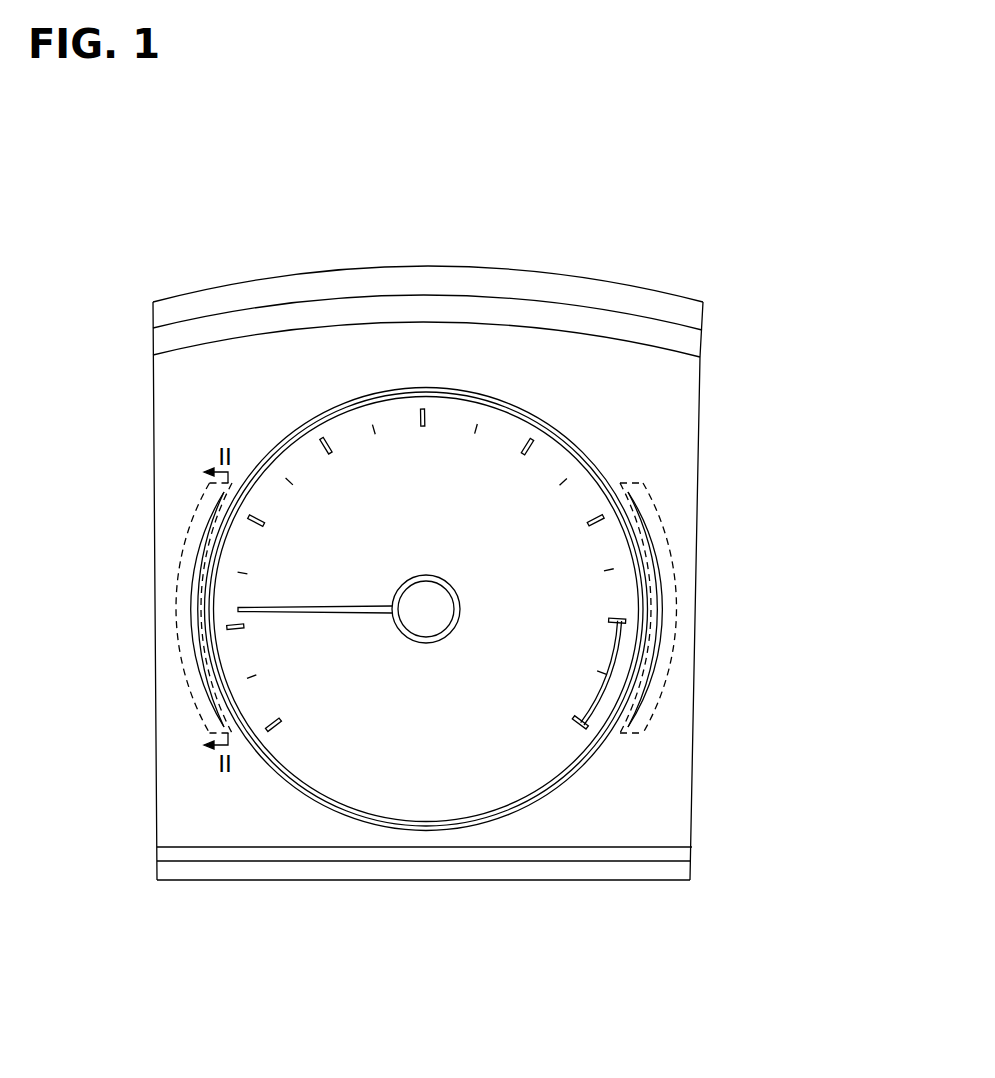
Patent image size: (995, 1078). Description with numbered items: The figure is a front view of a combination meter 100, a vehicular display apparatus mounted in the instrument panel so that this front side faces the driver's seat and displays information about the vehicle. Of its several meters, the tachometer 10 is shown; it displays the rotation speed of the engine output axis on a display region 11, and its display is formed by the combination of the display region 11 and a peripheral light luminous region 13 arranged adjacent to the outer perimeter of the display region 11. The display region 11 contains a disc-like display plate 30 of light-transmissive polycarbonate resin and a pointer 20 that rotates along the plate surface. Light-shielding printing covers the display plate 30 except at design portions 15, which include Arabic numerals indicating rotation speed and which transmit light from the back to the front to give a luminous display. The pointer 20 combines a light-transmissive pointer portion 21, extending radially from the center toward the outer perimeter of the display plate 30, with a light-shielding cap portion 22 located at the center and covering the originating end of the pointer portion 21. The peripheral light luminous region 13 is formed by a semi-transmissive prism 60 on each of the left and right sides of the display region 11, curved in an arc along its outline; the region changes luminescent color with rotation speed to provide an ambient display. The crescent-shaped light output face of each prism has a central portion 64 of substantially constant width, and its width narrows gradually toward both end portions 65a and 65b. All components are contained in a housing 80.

The combination meter 100 is at (682, 278).
The tachometer 10 is at (540, 407).
The display region 11 is at (613, 551).
The peripheral light luminous region 13 is at (662, 583).
The design portions 15 is at (577, 517).
The pointer 20 is at (228, 653).
The pointer portion 21 is at (243, 622).
The cap portion 22 is at (438, 643).
The display plate 30 is at (488, 753).
The semi-transmissive prism 60 is at (655, 680).
The central portion 64 is at (660, 610).
The end portion 65a is at (630, 483).
The end portion 65b is at (628, 733).
The housing 80 is at (234, 880).